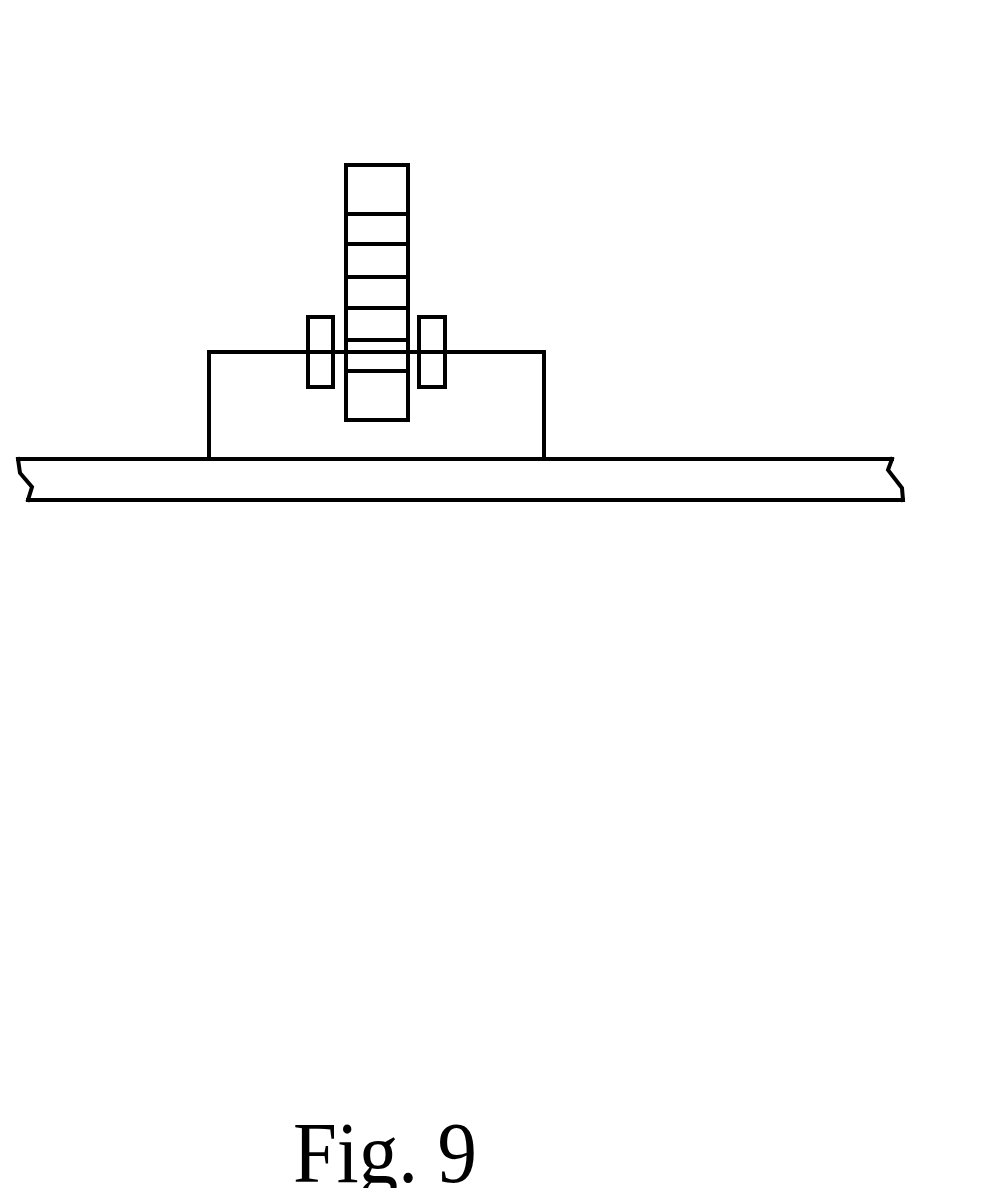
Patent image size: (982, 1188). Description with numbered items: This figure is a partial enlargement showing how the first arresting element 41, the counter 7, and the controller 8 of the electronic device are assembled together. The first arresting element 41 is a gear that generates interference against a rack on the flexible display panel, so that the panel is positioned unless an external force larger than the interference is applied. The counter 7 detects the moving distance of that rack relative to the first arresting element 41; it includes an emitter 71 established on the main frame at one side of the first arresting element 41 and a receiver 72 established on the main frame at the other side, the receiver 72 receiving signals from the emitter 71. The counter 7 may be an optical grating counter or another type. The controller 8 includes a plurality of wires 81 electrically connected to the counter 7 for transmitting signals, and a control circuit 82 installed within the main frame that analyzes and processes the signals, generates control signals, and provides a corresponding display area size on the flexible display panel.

The first arresting element 41 is at (397, 233).
The counter 7 is at (342, 288).
The emitter 71 is at (430, 327).
The receiver 72 is at (318, 335).
The controller 8 is at (460, 564).
The wires 81 is at (547, 407).
The control circuit 82 is at (300, 485).